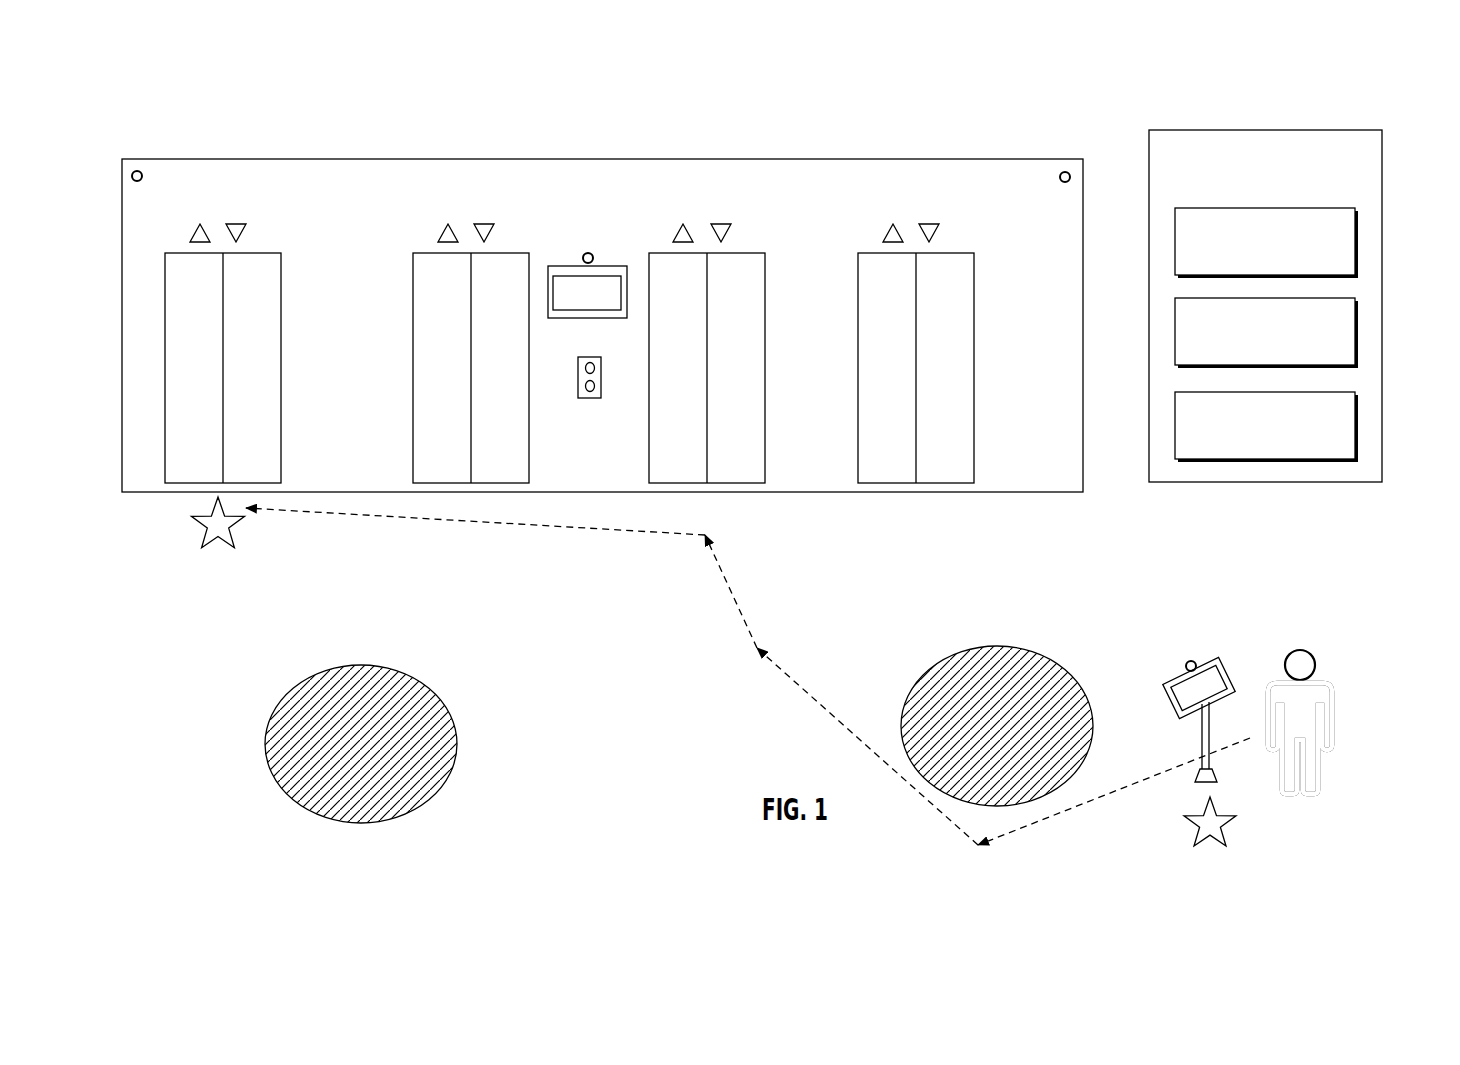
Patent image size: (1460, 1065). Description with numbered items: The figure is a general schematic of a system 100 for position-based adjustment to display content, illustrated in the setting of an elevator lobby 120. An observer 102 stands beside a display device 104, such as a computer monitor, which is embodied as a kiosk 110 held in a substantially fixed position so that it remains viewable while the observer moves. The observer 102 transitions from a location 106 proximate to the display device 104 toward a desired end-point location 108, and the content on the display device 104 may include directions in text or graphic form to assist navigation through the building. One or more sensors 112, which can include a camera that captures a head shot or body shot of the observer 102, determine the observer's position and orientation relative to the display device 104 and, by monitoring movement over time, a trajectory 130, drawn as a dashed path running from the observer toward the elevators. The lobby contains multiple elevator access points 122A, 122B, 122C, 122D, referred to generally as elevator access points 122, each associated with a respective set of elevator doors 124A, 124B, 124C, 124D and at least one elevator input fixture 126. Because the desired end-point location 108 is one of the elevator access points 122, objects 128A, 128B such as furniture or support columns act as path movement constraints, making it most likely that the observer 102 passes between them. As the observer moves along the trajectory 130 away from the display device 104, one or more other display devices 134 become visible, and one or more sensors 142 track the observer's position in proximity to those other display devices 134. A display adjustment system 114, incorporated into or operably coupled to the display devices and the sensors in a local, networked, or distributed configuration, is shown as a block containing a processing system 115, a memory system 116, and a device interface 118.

The system 100 is at (488, 116).
The observer 102 is at (1308, 795).
The display device 104 is at (1232, 670).
The location 106 is at (1215, 842).
The desired end-point location 108 is at (205, 540).
The kiosk 110 is at (1200, 745).
The sensors 112 is at (132, 171).
The display adjustment system 114 is at (1335, 128).
The processing system 115 is at (1360, 244).
The memory system 116 is at (1360, 331).
The device interface 118 is at (1360, 418).
The elevator lobby 120 is at (1033, 493).
The elevator access points 122 is at (133, 518).
The elevator access point 122A is at (223, 334).
The elevator access point 122B is at (472, 333).
The elevator access point 122C is at (710, 333).
The elevator access point 122D is at (915, 333).
The elevator doors 124A is at (178, 268).
The elevator doors 124B is at (432, 270).
The elevator doors 124C is at (668, 270).
The elevator doors 124D is at (875, 270).
The elevator input fixture 126 is at (582, 398).
The object 128A is at (320, 672).
The object 128B is at (960, 650).
The trajectory 130 is at (1025, 830).
The other display devices 134 is at (590, 318).
The sensors 142 is at (585, 252).